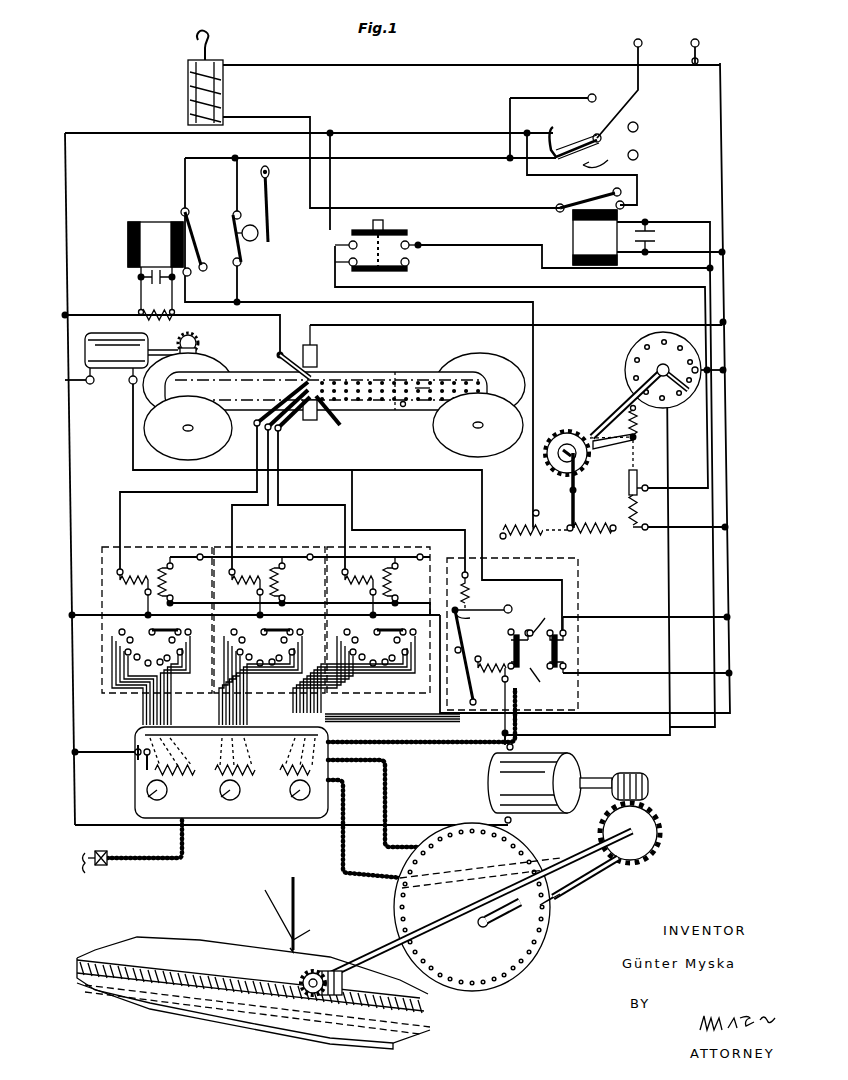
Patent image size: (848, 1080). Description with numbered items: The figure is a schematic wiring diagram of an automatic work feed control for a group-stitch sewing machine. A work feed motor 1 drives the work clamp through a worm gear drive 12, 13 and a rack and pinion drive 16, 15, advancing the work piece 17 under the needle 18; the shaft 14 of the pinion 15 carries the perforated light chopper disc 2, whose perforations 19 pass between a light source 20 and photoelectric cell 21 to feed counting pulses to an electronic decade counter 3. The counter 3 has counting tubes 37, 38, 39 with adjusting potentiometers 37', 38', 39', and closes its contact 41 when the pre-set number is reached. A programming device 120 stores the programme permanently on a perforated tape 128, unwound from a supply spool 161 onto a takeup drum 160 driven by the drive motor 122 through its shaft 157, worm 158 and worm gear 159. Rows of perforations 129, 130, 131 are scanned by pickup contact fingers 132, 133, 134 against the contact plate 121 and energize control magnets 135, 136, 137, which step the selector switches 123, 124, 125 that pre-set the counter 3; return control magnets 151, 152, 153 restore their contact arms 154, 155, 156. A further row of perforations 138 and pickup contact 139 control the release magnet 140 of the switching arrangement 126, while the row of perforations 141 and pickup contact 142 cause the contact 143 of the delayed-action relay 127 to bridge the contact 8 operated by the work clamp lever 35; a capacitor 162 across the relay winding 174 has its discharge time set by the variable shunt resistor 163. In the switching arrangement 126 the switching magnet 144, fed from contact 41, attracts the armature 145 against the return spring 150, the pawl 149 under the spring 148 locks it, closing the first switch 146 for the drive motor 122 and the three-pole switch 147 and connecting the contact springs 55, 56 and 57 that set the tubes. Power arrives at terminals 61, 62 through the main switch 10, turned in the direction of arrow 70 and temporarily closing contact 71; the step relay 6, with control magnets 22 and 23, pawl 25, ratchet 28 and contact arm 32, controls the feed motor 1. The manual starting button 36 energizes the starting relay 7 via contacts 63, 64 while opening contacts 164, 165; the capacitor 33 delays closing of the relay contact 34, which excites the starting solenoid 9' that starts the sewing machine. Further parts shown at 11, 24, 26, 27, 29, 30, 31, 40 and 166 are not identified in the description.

The work feed motor 1 is at (492, 782).
The perforated disc light chopper 2 is at (520, 968).
The electronic decade counter 3 is at (212, 772).
The step relay 6 is at (600, 439).
The starting relay 7 is at (573, 232).
The contact 8 is at (230, 242).
The starting magnet or solenoid 9' is at (219, 78).
The main power or control switch 10 is at (580, 134).
The motor shaft 11 is at (600, 780).
The worm gear drive 12 is at (648, 785).
The worm gear drive 13 is at (658, 848).
The shaft 14 is at (580, 848).
The pinion 15 is at (328, 968).
The rack 16 is at (300, 1012).
The work piece 17 is at (172, 950).
The needle 18 is at (296, 922).
The perforation 19 is at (540, 925).
The light source 20 is at (520, 930).
The photoelectric cell 21 is at (600, 880).
The control magnet 22 is at (523, 525).
The further control magnet 23 is at (640, 510).
The pointer rod 24 is at (578, 512).
The pawl 25 is at (578, 490).
The lever 26 is at (625, 443).
The spring 27 is at (624, 421).
The ratchet 28 is at (567, 430).
The resistor 29 is at (595, 531).
The pivot 30 is at (638, 437).
The pointer rod 31 is at (608, 418).
The contact arm 32 is at (630, 360).
The capacitor 33 is at (656, 235).
The relay contact 34 is at (580, 200).
The work clamp lever 35 is at (270, 205).
The manual starting switch or button 36 is at (384, 220).
The counting tube 37 is at (132, 795).
The adjusting potentiometer 37' is at (173, 768).
The counting tube 38 is at (221, 795).
The adjusting potentiometer 38' is at (243, 764).
The counting tube 39 is at (289, 795).
The adjusting potentiometer 39' is at (303, 776).
The mains plug 40 is at (103, 866).
The contact 41 is at (135, 768).
The contact spring 55 is at (538, 617).
The contact spring 56 is at (546, 680).
The spring contact 57 is at (520, 692).
The terminal 61 is at (634, 44).
The terminal 62 is at (691, 44).
The contact 63 is at (410, 242).
The contact 64 is at (346, 243).
The arrow 70 is at (610, 145).
The contact 71 is at (589, 96).
The programming device 120 is at (326, 385).
The contact plate 121 is at (305, 343).
The drive motor 122 is at (110, 372).
The step selector switch 123 is at (383, 562).
The step selector switch 124 is at (272, 568).
The step selector switch 125 is at (160, 568).
The switching arrangement 126 is at (538, 635).
The delayed-action relay 127 is at (139, 253).
The perforated tape 128 is at (262, 375).
The row of perforations 129 is at (455, 360).
The row of perforations 130 is at (417, 385).
The row of perforations 131 is at (396, 370).
The pickup contact finger 132 is at (283, 432).
The pickup contact finger 133 is at (271, 430).
The pickup contact finger 134 is at (255, 428).
The control magnet 135 is at (359, 585).
The control magnet 136 is at (246, 585).
The control magnet 137 is at (134, 585).
The row of perforations 138 is at (402, 408).
The pickup contact 139 is at (336, 426).
The release magnet 140 is at (463, 572).
The row of perforations 141 is at (368, 378).
The pickup contact 142 is at (280, 352).
The contact 143 is at (196, 222).
The switching magnet 144 is at (490, 672).
The armature 145 is at (470, 702).
The first switch 146 is at (578, 637).
The three-pole switch 147 is at (512, 645).
The spring 148 is at (460, 609).
The pawl 149 is at (520, 603).
The return spring 150 is at (459, 655).
The return control magnet 151 is at (392, 582).
The return control magnet 152 is at (280, 582).
The return control magnet 153 is at (166, 582).
The contact arm 154 is at (376, 668).
The contact arm 155 is at (270, 670).
The contact arm 156 is at (158, 670).
The shaft 157 is at (165, 348).
The worm 158 is at (197, 352).
The worm gear 159 is at (196, 336).
The takeup drum 160 is at (145, 428).
The supply drum or spool 161 is at (450, 440).
The capacitor 162 is at (140, 290).
The variable shunt resistor 163 is at (140, 312).
The contact 164 is at (410, 263).
The contact 165 is at (348, 261).
The perforation 166 is at (418, 408).
The winding 174 is at (150, 222).